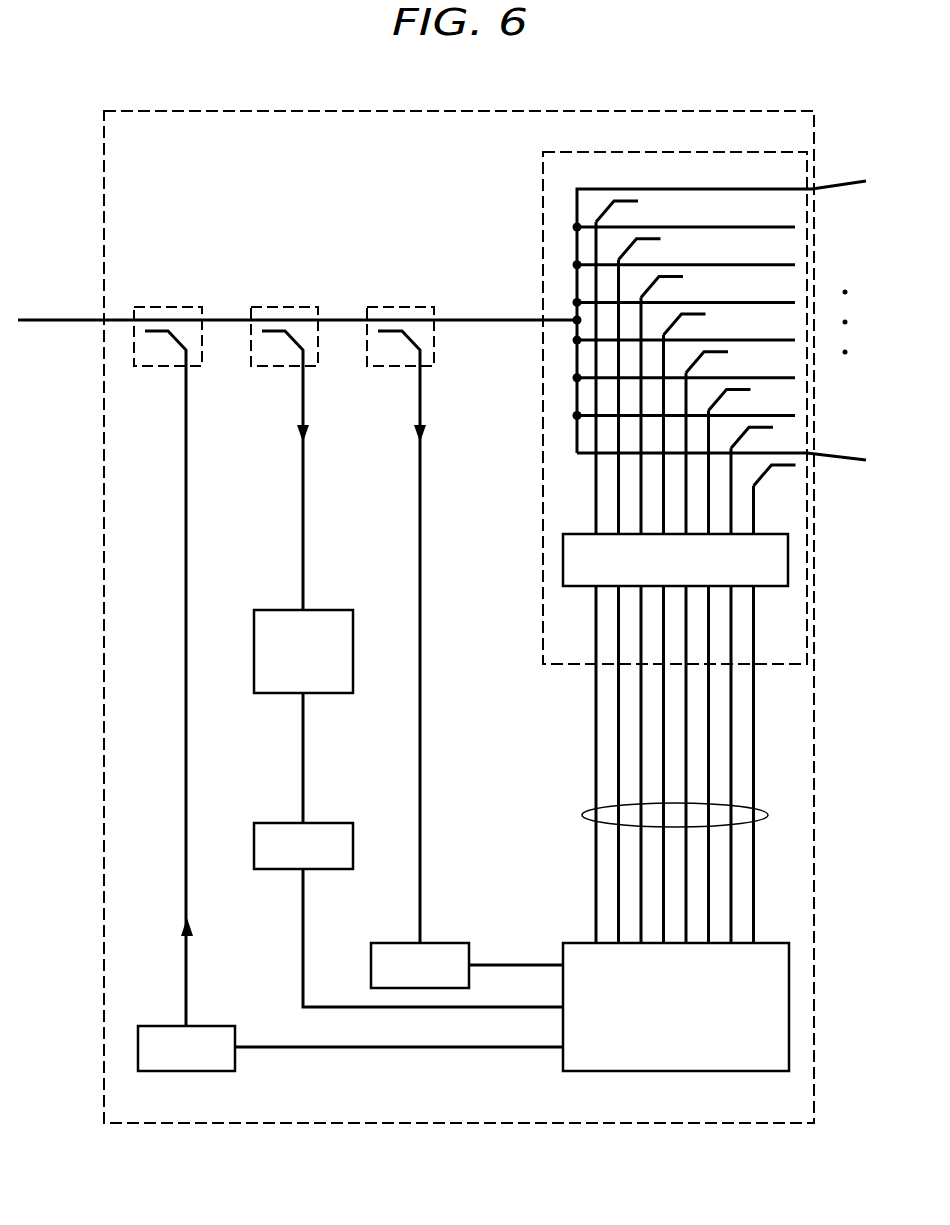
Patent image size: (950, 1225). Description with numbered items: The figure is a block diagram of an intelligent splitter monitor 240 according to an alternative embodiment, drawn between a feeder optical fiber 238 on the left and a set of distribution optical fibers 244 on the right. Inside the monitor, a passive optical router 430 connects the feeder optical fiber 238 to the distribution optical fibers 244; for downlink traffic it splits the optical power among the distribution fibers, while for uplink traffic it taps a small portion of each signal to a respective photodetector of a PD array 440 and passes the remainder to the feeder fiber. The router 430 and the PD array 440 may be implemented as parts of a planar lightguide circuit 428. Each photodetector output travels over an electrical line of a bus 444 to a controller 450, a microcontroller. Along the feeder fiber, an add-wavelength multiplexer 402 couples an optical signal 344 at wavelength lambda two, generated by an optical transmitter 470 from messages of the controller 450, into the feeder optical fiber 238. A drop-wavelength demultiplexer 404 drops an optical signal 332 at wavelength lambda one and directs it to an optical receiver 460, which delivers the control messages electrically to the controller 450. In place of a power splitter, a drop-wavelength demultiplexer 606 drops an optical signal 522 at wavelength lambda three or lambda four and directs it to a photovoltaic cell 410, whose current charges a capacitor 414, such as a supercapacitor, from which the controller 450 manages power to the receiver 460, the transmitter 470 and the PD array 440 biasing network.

The feeder optical fiber 238 is at (63, 319).
The intelligent splitter monitor 240 is at (722, 111).
The distribution optical fibers 244 is at (849, 182).
The add-wavelength multiplexer 402 is at (169, 306).
The drop-wavelength demultiplexer 606 is at (283, 306).
The drop-wavelength demultiplexer 404 is at (401, 306).
The optical signal 522 is at (305, 395).
The optical signal 332 is at (422, 395).
The optical signal 344 is at (189, 981).
The photovoltaic cell 410 is at (276, 608).
The capacitor 414 is at (314, 823).
The planar lightguide circuit 428 is at (543, 170).
The passive optical router 430 is at (566, 279).
The PD array 440 is at (567, 587).
The bus 444 is at (582, 814).
The optical receiver 460 is at (438, 943).
The controller 450 is at (621, 1071).
The optical transmitter 470 is at (191, 1071).